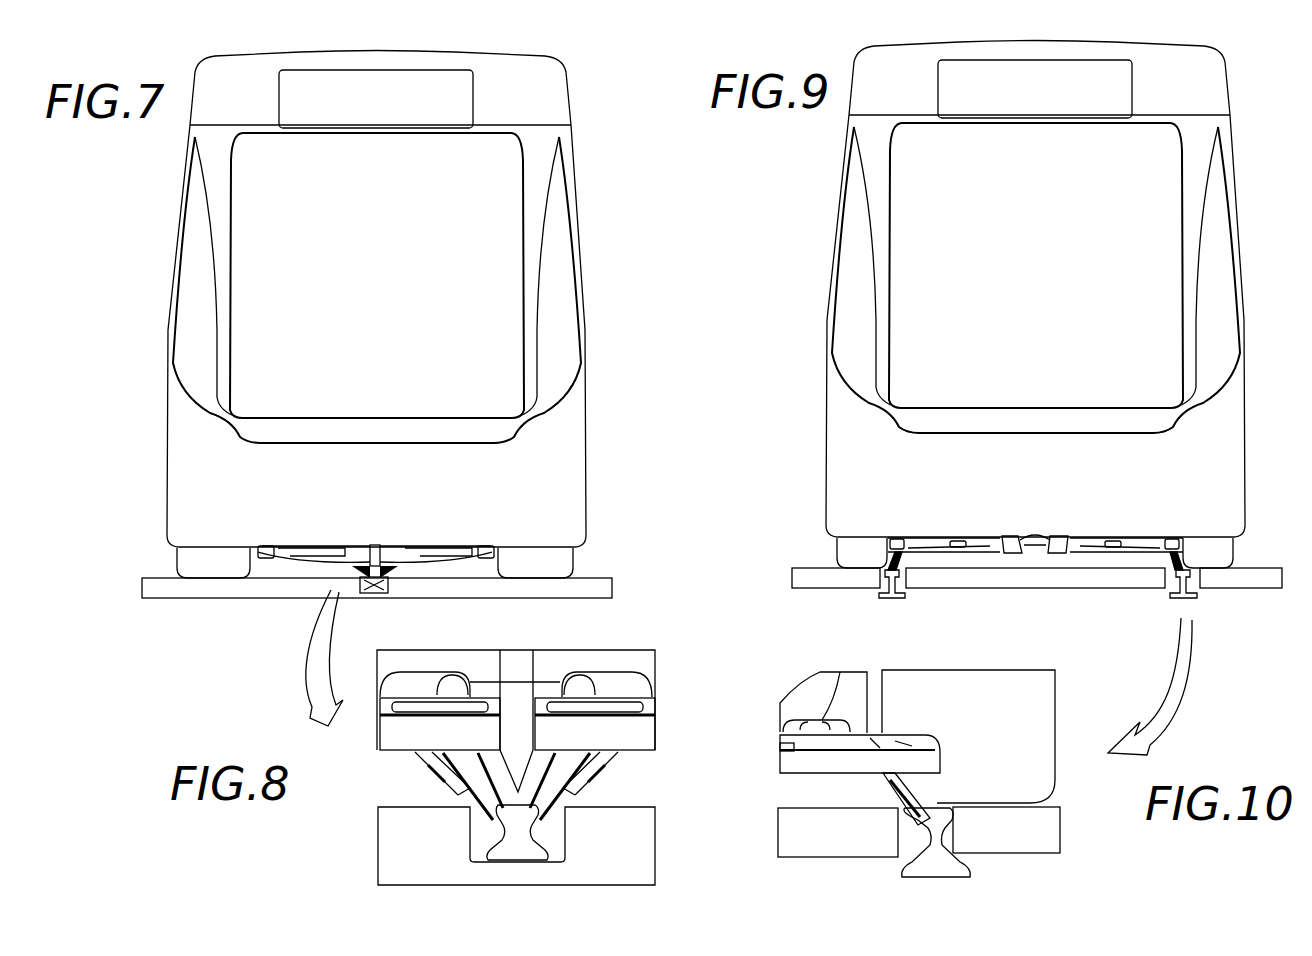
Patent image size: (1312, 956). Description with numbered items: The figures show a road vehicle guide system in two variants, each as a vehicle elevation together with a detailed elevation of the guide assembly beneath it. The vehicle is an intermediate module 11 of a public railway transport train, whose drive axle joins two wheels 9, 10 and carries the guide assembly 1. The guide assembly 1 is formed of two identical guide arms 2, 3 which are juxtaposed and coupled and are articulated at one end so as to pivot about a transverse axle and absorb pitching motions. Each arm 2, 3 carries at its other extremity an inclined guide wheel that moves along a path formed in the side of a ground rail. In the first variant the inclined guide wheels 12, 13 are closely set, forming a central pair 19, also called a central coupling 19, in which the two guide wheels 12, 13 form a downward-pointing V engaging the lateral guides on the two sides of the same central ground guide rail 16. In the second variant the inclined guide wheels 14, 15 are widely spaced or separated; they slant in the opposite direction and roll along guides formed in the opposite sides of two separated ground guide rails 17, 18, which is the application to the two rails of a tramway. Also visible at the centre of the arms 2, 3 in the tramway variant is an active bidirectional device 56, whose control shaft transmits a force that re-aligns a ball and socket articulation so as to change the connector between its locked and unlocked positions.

In FIG. 7, the guide assembly 1 is at (369, 613).
In FIG. 7, the guide arm 2 is at (297, 560).
In FIG. 8, the guide arm 2 is at (388, 735).
In FIG. 9, the guide arm 2 is at (932, 548).
In FIG. 7, the guide arm 3 is at (423, 557).
In FIG. 8, the guide arm 3 is at (630, 733).
In FIG. 9, the guide arm 3 is at (1122, 548).
In FIG. 10, the guide arm 3 is at (790, 772).
In FIG. 7, the wheel 9 is at (563, 562).
In FIG. 9, the wheel 9 is at (1210, 540).
In FIG. 7, the wheel 10 is at (227, 572).
In FIG. 9, the wheel 10 is at (850, 545).
In FIG. 7, the intermediate module 11 is at (592, 268).
In FIG. 9, the intermediate module 11 is at (822, 290).
In FIG. 8, the inclined guide wheel 12 is at (432, 785).
In FIG. 8, the inclined guide wheel 13 is at (593, 782).
In FIG. 9, the inclined guide wheel 14 is at (868, 557).
In FIG. 9, the inclined guide wheel 15 is at (1190, 557).
In FIG. 10, the inclined guide wheel 15 is at (870, 790).
In FIG. 7, the central ground guide rail 16 is at (377, 600).
In FIG. 8, the central ground guide rail 16 is at (547, 843).
In FIG. 9, the ground guide rail 17 is at (867, 595).
In FIG. 9, the ground guide rail 18 is at (1200, 605).
In FIG. 10, the ground guide rail 18 is at (980, 872).
In FIG. 7, the central pair 19 is at (352, 600).
In FIG. 8, the central pair 19 is at (520, 792).
In FIG. 9, the active bidirectional device 56 is at (1013, 560).